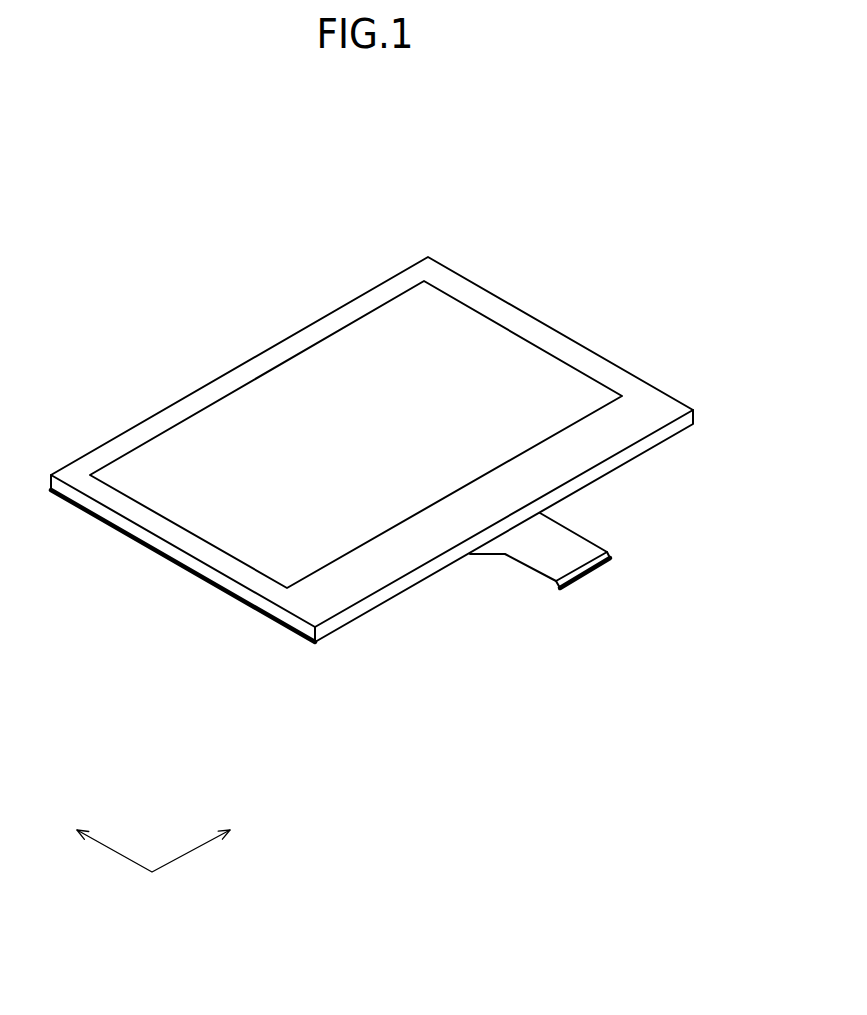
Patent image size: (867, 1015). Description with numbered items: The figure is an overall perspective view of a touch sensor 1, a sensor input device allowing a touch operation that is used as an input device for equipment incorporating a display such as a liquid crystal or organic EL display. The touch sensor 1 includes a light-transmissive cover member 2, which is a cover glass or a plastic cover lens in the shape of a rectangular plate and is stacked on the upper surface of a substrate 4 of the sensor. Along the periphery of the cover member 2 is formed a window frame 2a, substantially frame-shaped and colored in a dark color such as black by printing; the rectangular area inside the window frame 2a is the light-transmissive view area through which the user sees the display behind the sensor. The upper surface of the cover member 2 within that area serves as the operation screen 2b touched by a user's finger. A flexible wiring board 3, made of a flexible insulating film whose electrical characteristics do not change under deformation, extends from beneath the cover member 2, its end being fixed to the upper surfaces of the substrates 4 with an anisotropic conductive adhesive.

The touch sensor 1 is at (398, 203).
The cover member 2 is at (148, 417).
The window frame 2a is at (243, 373).
The operation screen 2b is at (355, 355).
The flexible wiring board 3 is at (522, 565).
The substrate 4 is at (142, 545).